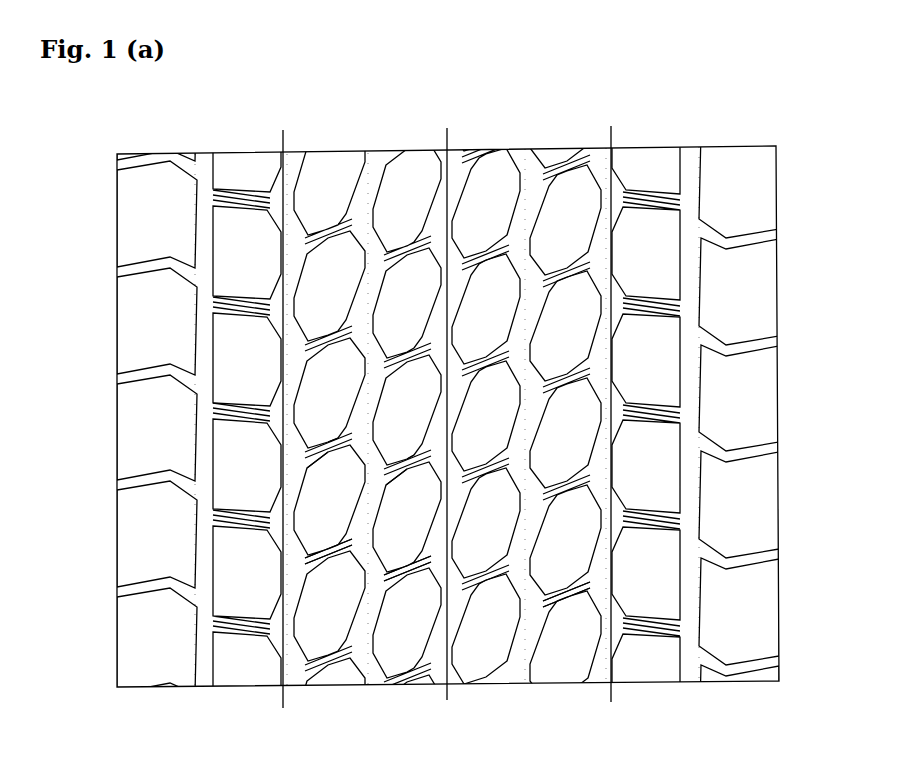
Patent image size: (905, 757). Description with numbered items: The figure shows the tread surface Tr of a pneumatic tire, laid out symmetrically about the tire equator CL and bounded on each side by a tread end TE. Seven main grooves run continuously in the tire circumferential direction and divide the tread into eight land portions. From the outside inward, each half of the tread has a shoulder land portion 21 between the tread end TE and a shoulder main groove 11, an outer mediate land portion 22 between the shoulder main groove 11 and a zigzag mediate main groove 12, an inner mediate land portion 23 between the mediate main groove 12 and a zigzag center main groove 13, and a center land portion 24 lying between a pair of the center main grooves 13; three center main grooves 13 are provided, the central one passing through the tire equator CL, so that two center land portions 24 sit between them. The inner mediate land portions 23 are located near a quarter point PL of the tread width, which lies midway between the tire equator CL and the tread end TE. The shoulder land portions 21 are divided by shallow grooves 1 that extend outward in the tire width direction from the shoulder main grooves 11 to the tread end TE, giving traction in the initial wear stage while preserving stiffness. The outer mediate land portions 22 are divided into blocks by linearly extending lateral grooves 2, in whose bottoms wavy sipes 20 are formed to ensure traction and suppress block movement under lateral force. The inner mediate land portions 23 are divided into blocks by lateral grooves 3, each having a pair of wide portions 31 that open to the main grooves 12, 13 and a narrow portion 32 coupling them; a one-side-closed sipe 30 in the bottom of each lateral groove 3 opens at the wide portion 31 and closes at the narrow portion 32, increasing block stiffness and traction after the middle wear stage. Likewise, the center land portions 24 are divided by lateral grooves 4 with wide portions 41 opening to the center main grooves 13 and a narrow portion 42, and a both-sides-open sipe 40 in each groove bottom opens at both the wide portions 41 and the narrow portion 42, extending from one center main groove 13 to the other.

The shallow groove 1 is at (147, 358).
The lateral groove 2 is at (244, 402).
The lateral groove 3 is at (346, 432).
The lateral groove 4 is at (423, 447).
The shoulder main groove 11 is at (205, 687).
The mediate main groove 12 is at (300, 687).
The center main groove 13 is at (373, 687).
The wavy sipe 20 is at (239, 502).
The shoulder land portion 21 is at (146, 166).
The outer mediate land portion 22 is at (236, 154).
The inner mediate land portion 23 is at (325, 153).
The center land portion 24 is at (413, 152).
The one-side-closed sipe 30 is at (319, 556).
The wide portion 31 is at (328, 462).
The narrow portion 32 is at (325, 432).
The both-sides-open sipe 40 is at (420, 555).
The wide portion 41 is at (406, 485).
The narrow portion 42 is at (408, 450).
The quarter point PL is at (448, 404).
The tire equator CL is at (447, 401).
The tread end TE is at (117, 570).
The tread surface Tr is at (105, 275).